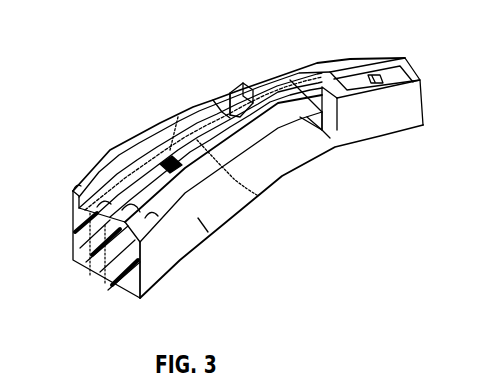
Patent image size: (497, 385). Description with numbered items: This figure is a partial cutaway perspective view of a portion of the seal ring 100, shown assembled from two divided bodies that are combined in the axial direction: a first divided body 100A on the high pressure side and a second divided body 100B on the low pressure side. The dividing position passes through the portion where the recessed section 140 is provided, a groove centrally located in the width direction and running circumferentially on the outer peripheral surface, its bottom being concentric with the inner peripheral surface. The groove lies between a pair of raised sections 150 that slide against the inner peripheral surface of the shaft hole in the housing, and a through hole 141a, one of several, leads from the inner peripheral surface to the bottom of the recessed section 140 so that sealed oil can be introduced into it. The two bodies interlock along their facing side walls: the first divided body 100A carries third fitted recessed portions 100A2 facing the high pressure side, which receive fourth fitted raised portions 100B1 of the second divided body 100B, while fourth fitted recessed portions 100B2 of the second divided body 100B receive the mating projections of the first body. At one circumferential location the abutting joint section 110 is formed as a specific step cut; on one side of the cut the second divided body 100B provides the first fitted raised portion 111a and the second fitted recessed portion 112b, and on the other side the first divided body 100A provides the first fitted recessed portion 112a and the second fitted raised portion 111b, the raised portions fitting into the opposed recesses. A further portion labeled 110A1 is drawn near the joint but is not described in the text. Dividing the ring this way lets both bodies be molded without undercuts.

The seal ring 100 is at (143, 50).
The abutting joint section 110 is at (270, 65).
The first divided body 100A is at (207, 250).
The second divided body 100B is at (103, 150).
The third fitted recessed portion 100A2 is at (118, 262).
The fourth fitted raised portion 100B1 is at (203, 226).
The fourth fitted recessed portion 100B2 is at (250, 197).
The recessed section 140 is at (73, 238).
The raised section 150 is at (78, 178).
The through hole 141a is at (167, 143).
The wall inner surface 110A1 is at (177, 113).
The second fitted recessed portion 112b is at (218, 102).
The first fitted raised portion 111a is at (247, 88).
The first fitted recessed portion 112a is at (328, 127).
The second fitted raised portion 111b is at (312, 150).